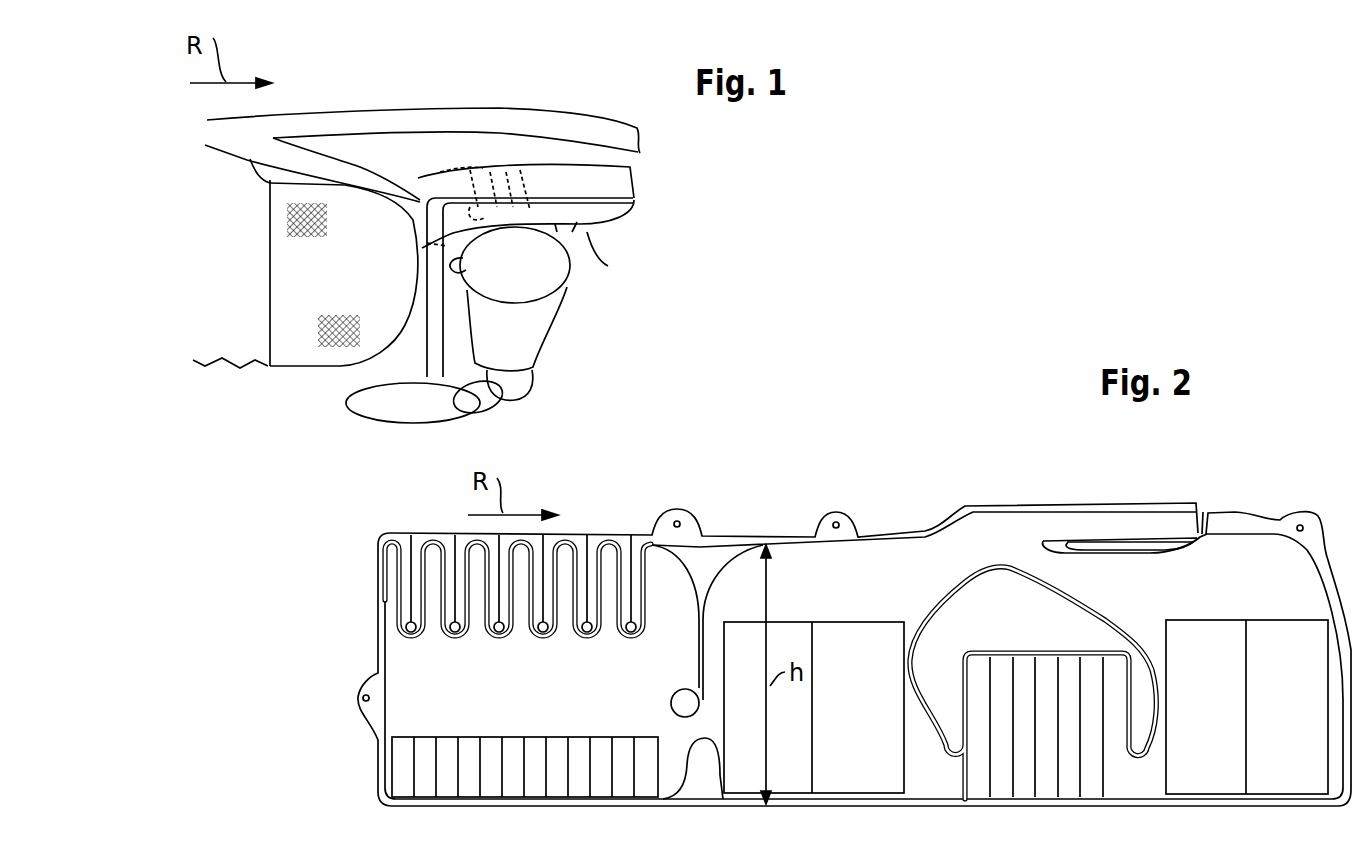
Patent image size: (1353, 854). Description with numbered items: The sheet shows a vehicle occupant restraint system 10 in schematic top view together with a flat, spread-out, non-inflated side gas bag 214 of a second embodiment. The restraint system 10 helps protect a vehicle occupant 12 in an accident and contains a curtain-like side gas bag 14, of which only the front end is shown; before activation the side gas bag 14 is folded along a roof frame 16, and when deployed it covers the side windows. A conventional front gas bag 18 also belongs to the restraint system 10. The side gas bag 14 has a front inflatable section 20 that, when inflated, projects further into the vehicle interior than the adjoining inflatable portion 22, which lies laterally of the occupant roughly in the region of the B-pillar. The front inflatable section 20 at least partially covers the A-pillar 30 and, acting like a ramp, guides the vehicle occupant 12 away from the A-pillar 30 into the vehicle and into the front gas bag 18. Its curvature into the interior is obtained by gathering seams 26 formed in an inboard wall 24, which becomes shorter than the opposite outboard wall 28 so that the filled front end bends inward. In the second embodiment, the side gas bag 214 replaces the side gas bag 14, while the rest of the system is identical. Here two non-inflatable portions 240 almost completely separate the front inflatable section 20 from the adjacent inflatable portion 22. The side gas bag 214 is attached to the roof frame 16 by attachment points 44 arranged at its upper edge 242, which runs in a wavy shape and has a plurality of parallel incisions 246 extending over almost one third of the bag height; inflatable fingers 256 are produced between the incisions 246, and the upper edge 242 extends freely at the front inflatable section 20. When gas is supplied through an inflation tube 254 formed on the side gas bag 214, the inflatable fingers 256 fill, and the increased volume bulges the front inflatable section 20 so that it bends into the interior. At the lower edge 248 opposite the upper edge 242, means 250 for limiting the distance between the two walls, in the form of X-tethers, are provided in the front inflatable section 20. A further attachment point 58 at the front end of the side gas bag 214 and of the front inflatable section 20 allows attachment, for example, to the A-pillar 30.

In FIG. 1, the vehicle occupant restraint system 10 is at (695, 275).
In FIG. 1, the vehicle occupant 12 is at (537, 278).
In FIG. 1, the side gas bag 14 is at (578, 152).
In FIG. 1, the roof frame 16 is at (634, 183).
In FIG. 1, the front gas bag 18 is at (323, 346).
In FIG. 1, the front inflatable section 20 is at (413, 226).
In FIG. 2, the front inflatable section 20 is at (518, 617).
In FIG. 1, the inflatable portion 22 is at (620, 210).
In FIG. 2, the inflatable portion 22 is at (1026, 683).
In FIG. 1, the inboard wall 24 is at (593, 250).
In FIG. 1, the gathering seams 26 is at (478, 200).
In FIG. 1, the outboard wall 28 is at (543, 157).
In FIG. 1, the A-pillar 30 is at (360, 167).
In FIG. 2, the attachment points 44 is at (678, 521).
In FIG. 2, the further attachment point 58 is at (363, 698).
In FIG. 2, the side gas bag 214 is at (340, 623).
In FIG. 2, the non-inflatable portions 240 is at (710, 562).
In FIG. 2, the upper edge 242 is at (587, 540).
In FIG. 2, the incisions 246 is at (413, 560).
In FIG. 2, the lower edge 248 is at (548, 805).
In FIG. 2, the means for limiting the distance 250 is at (443, 775).
In FIG. 2, the inflation tube 254 is at (1083, 527).
In FIG. 2, the inflatable fingers 256 is at (437, 557).